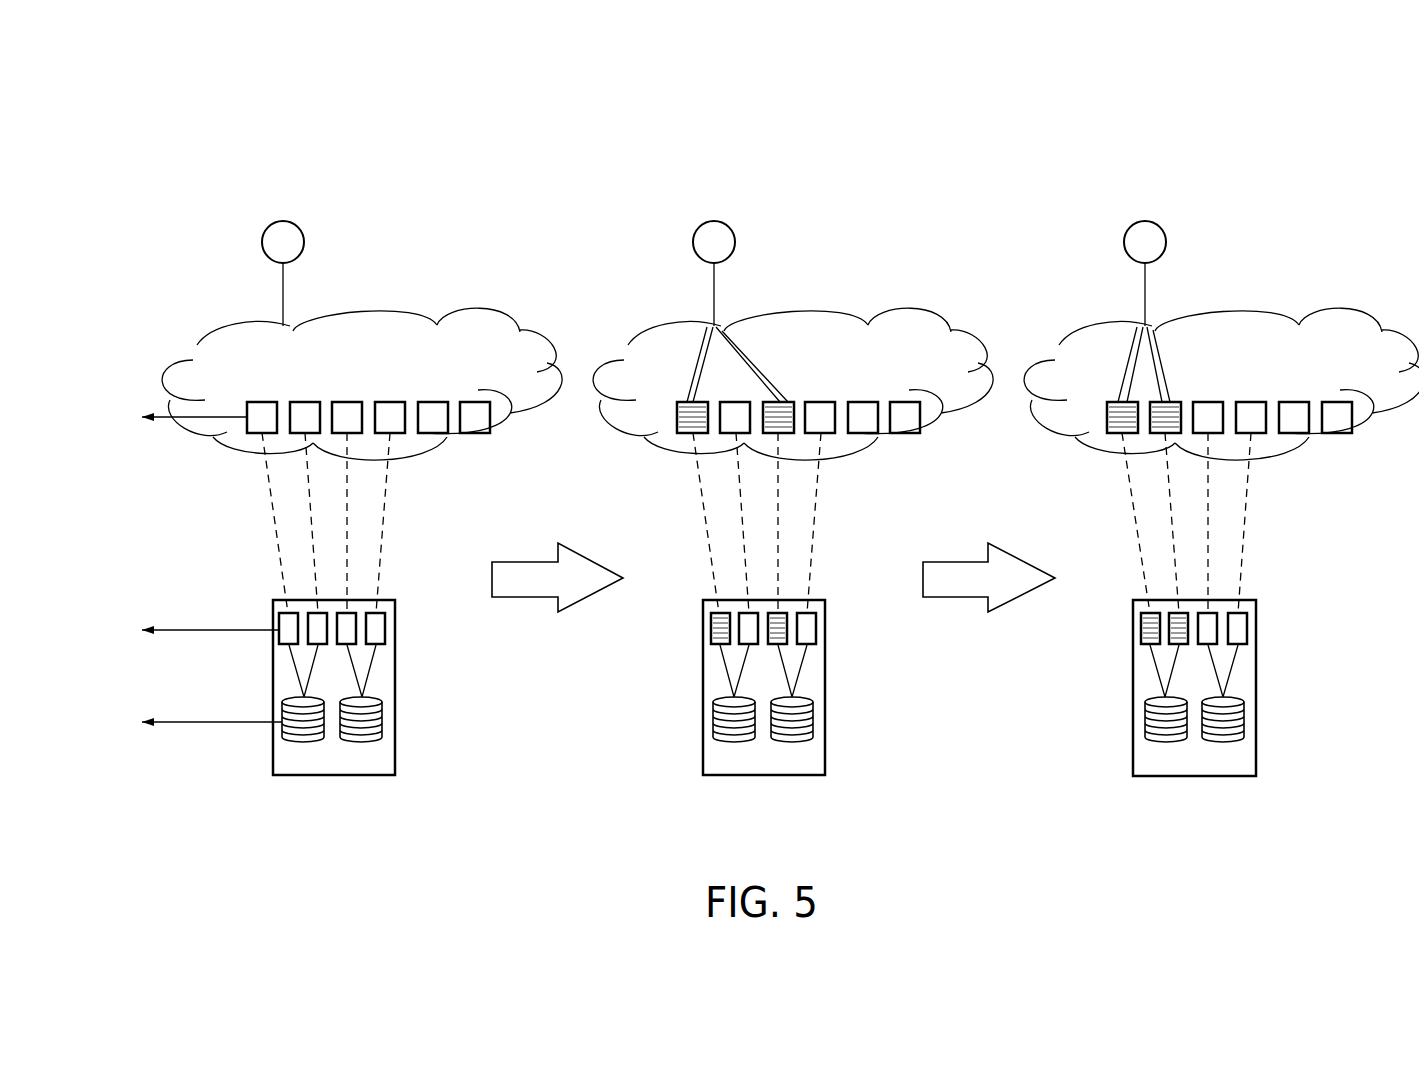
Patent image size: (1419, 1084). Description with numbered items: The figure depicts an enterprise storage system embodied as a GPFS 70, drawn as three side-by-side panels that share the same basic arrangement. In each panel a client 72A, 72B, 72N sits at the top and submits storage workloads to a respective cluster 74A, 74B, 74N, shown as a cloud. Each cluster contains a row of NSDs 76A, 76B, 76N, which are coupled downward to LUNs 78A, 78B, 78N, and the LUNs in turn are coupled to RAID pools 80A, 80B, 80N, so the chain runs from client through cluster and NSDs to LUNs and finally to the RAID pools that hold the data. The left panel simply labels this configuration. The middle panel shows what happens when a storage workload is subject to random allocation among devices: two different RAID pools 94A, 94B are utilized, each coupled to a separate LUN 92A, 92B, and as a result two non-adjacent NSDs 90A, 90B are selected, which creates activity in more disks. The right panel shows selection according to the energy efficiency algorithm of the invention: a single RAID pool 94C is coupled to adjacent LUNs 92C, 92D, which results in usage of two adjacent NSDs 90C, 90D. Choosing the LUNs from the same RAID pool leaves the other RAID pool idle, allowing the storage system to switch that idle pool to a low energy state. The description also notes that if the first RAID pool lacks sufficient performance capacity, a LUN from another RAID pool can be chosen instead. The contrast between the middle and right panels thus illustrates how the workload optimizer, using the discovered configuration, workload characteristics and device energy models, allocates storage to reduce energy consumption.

The GPFS 70 is at (998, 156).
The client 72A is at (283, 221).
The client 72B is at (712, 221).
The client 72N is at (1143, 221).
The cluster 74A is at (500, 313).
The cluster 74B is at (931, 313).
The cluster 74N is at (1362, 313).
The NSDs 76A is at (237, 390).
The NSDs 76B is at (668, 390).
The NSDs 76N is at (1098, 390).
The LUNs 78A is at (253, 597).
The LUNs 78B is at (688, 598).
The LUNs 78N is at (1118, 598).
The RAID pools 80A is at (333, 745).
The RAID pools 80B is at (763, 745).
The RAID pools 80N is at (1195, 745).
The NSD 90A is at (683, 400).
The NSD 90B is at (790, 402).
The NSD 90C is at (1115, 400).
The NSD 90D is at (1178, 402).
The LUN 92A is at (710, 632).
The LUN 92B is at (790, 633).
The LUN 92C is at (1142, 632).
The LUN 92D is at (1171, 645).
The RAID pool 94A is at (713, 725).
The RAID pool 94B is at (813, 725).
The RAID pool 94C is at (1145, 727).